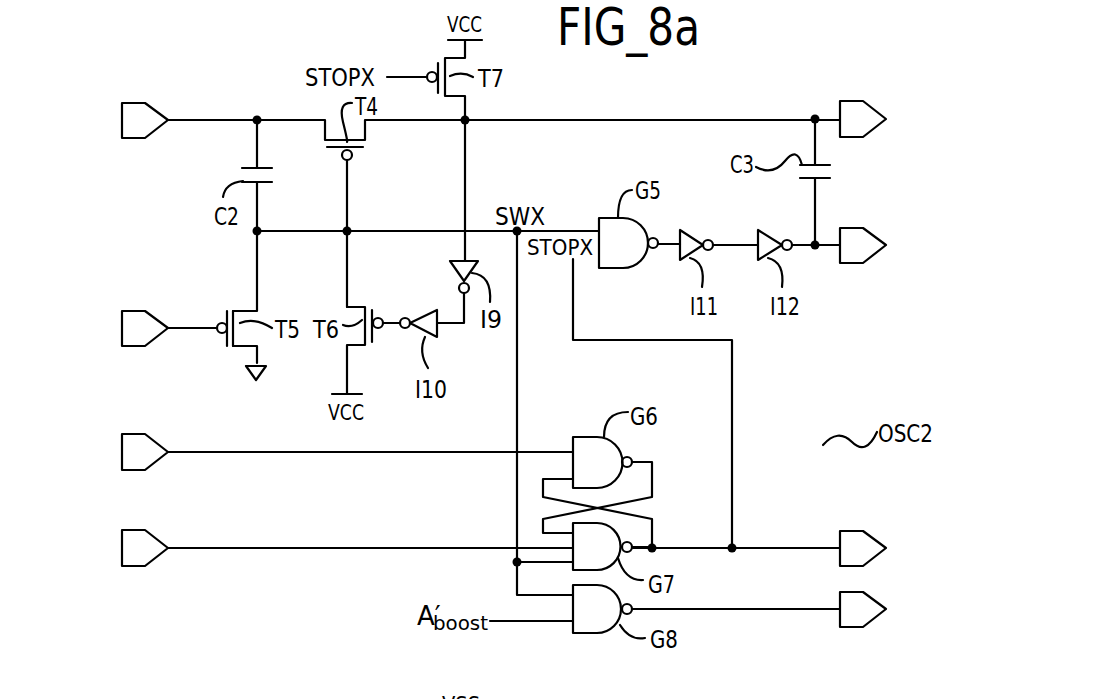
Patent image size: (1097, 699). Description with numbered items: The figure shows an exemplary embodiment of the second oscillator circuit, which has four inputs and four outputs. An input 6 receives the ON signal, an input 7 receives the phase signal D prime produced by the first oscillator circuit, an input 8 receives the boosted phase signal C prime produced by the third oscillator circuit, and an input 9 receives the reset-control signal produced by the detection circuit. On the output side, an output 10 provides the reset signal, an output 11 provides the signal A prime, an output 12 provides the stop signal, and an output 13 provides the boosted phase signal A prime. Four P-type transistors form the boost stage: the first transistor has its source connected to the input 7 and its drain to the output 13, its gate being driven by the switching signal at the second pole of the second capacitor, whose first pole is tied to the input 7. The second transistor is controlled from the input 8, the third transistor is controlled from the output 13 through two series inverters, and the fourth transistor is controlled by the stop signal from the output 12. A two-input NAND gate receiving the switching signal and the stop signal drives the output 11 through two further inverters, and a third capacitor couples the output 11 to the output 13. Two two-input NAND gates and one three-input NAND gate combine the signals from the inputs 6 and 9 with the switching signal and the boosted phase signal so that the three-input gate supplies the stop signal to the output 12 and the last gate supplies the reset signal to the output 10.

The input 6 is at (143, 530).
The input 7 is at (140, 103).
The input 8 is at (138, 312).
The input 9 is at (138, 434).
The output 10 is at (853, 628).
The output 11 is at (850, 263).
The output 12 is at (851, 532).
The output 13 is at (852, 100).